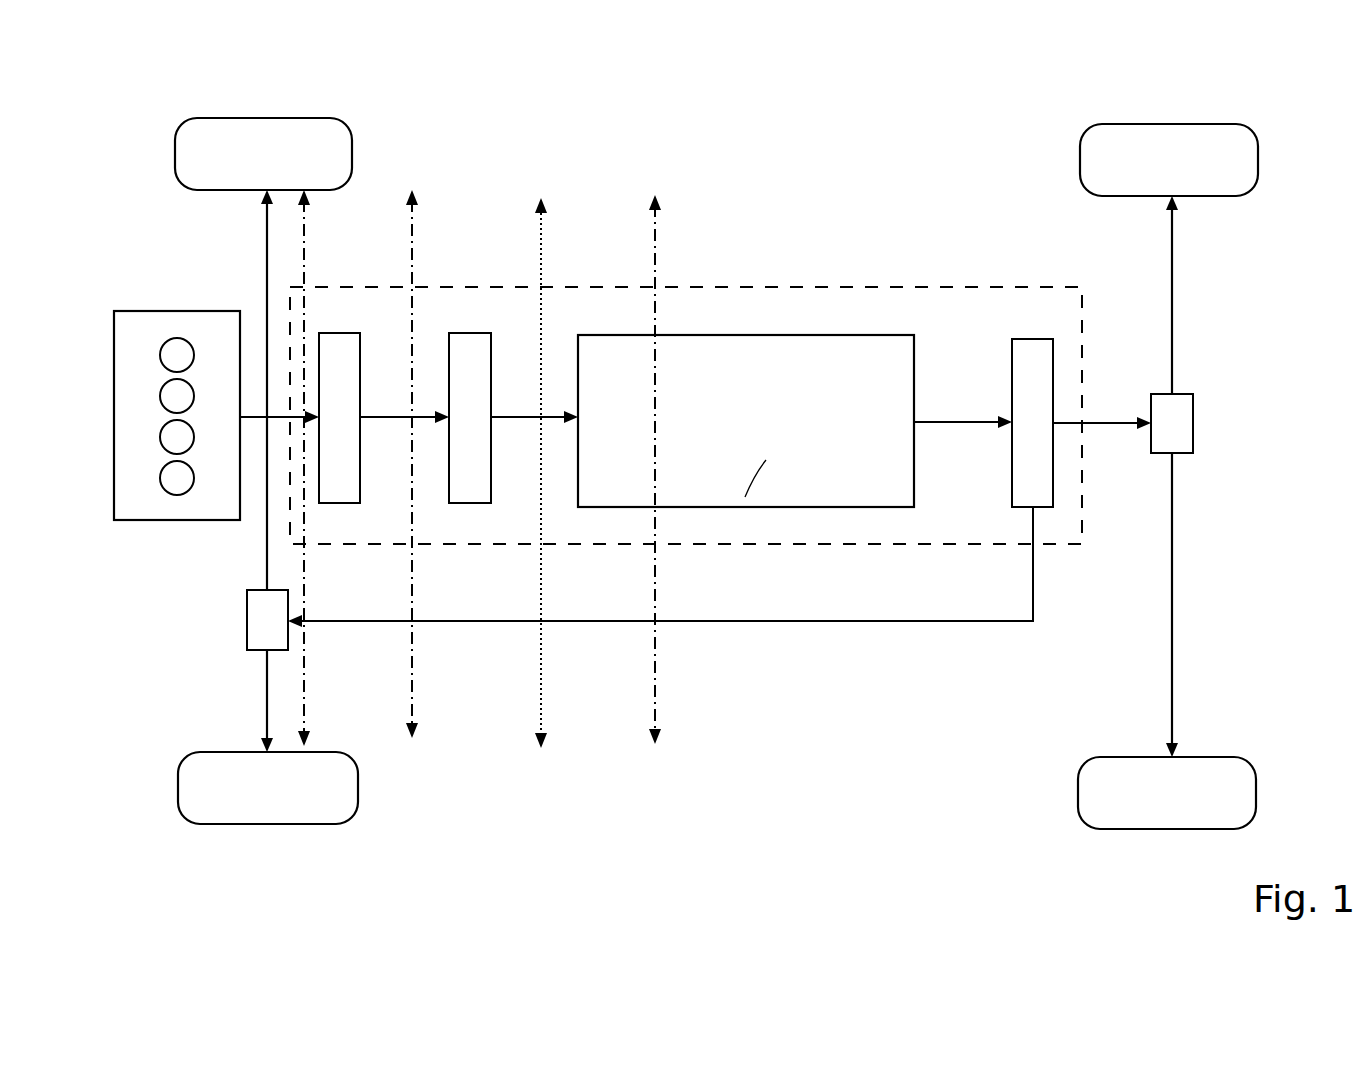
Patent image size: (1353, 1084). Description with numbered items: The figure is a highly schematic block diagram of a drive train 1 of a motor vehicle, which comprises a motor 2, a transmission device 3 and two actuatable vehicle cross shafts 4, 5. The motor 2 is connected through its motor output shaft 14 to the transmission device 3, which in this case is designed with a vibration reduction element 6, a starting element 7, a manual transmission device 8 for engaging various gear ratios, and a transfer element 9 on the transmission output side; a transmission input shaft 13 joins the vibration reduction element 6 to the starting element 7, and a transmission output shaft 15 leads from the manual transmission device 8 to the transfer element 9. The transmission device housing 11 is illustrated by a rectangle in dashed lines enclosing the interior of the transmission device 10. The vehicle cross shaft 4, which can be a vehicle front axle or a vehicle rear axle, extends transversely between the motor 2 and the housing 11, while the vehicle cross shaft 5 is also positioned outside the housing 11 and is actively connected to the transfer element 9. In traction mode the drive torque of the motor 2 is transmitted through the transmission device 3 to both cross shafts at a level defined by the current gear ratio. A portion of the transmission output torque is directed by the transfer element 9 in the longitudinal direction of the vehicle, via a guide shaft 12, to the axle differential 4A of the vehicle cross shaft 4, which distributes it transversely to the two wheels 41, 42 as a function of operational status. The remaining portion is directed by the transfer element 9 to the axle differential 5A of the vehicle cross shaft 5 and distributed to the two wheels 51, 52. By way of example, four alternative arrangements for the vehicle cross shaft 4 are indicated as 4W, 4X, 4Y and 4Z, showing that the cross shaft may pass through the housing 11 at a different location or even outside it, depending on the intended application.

The drive train 1 is at (158, 179).
The motor 2 is at (207, 502).
The transmission device 3 is at (726, 285).
The vehicle cross shaft 4 is at (283, 830).
The axle differential 4A is at (250, 630).
The alternative arrangement for the vehicle cross shaft 4W is at (542, 287).
The alternative arrangement for the vehicle cross shaft 4X is at (657, 243).
The alternative arrangement for the vehicle cross shaft 4Y is at (415, 238).
The alternative arrangement for the vehicle cross shaft 4Z is at (307, 237).
The vehicle cross shaft 5 is at (1070, 806).
The axle differential 5A is at (1175, 430).
The vibration reduction element 6 is at (338, 360).
The starting element 7 is at (460, 365).
The manual transmission device 8 is at (810, 367).
The transfer element 9 is at (1025, 368).
The interior of the transmission device 10 is at (972, 534).
The transmission device housing 11 is at (868, 288).
The guide shaft 12 is at (800, 624).
The transmission input shaft 13 is at (388, 422).
The motor output shaft 14 is at (252, 422).
The transmission output shaft 15 is at (963, 424).
The wheel 41 is at (220, 800).
The wheel 42 is at (220, 163).
The wheel 51 is at (1200, 775).
The wheel 52 is at (1203, 168).